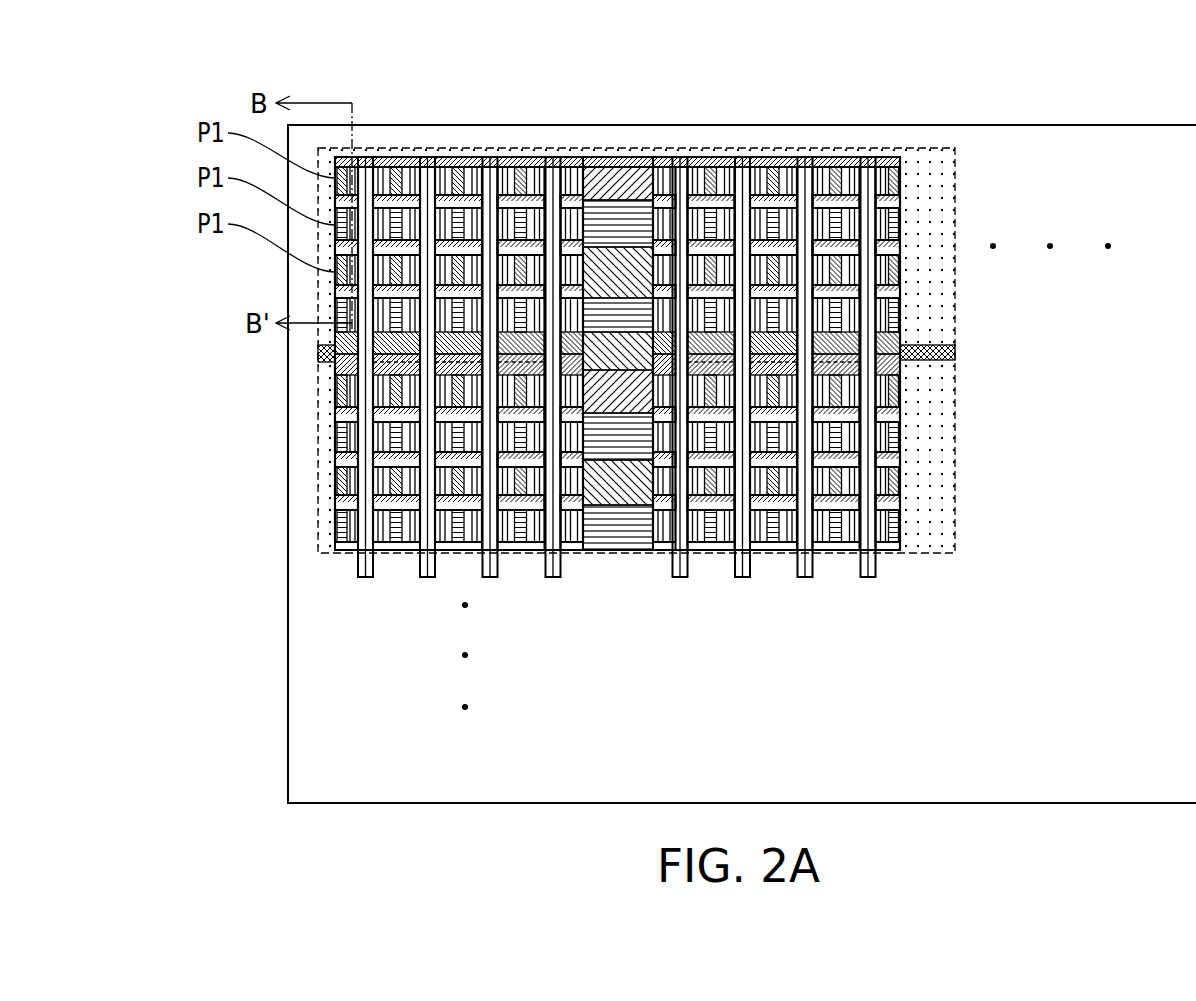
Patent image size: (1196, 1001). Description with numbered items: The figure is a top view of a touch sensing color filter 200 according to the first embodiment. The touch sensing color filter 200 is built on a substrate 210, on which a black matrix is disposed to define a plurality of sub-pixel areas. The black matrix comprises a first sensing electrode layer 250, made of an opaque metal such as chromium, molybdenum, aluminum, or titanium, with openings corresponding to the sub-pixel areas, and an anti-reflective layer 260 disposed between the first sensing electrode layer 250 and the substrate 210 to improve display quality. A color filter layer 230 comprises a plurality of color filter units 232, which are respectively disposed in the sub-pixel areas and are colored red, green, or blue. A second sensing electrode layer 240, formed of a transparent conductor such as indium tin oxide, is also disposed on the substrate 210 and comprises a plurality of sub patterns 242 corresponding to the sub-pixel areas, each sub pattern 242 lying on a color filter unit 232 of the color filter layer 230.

The touch sensing color filter 200 is at (1195, 842).
The substrate 210 is at (290, 500).
The color filter layer 230 is at (140, 140).
The color filter unit 232 is at (333, 162).
The second sensing electrode layer 240 is at (691, 309).
The sub pattern 242 is at (1157, 60).
The first sensing electrode layer 250 is at (318, 345).
The anti-reflective layer 260 is at (318, 358).